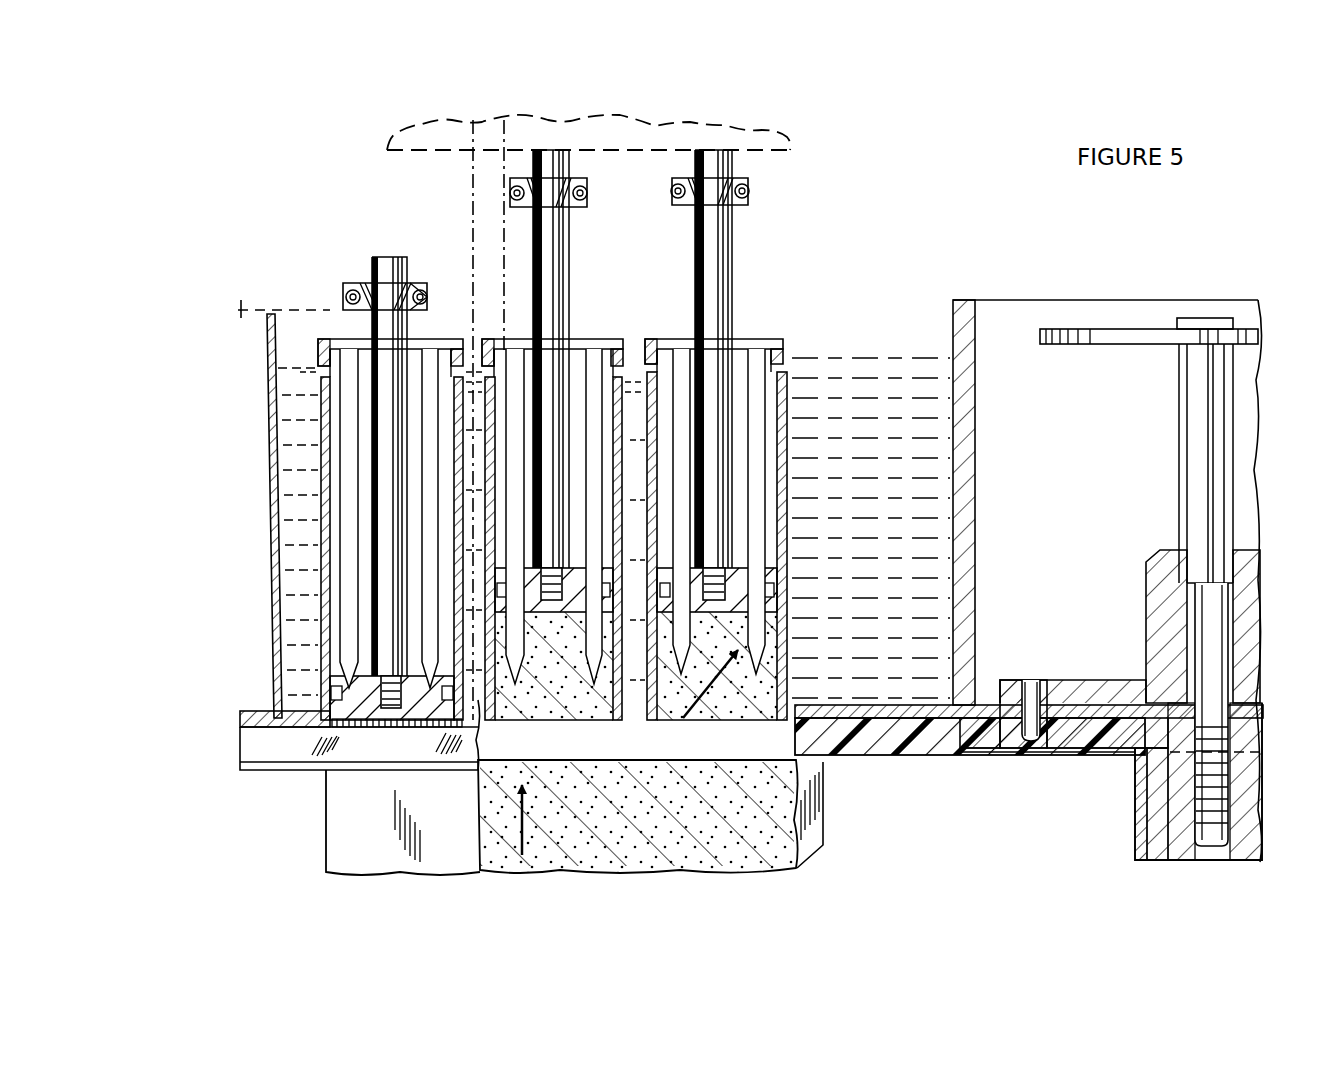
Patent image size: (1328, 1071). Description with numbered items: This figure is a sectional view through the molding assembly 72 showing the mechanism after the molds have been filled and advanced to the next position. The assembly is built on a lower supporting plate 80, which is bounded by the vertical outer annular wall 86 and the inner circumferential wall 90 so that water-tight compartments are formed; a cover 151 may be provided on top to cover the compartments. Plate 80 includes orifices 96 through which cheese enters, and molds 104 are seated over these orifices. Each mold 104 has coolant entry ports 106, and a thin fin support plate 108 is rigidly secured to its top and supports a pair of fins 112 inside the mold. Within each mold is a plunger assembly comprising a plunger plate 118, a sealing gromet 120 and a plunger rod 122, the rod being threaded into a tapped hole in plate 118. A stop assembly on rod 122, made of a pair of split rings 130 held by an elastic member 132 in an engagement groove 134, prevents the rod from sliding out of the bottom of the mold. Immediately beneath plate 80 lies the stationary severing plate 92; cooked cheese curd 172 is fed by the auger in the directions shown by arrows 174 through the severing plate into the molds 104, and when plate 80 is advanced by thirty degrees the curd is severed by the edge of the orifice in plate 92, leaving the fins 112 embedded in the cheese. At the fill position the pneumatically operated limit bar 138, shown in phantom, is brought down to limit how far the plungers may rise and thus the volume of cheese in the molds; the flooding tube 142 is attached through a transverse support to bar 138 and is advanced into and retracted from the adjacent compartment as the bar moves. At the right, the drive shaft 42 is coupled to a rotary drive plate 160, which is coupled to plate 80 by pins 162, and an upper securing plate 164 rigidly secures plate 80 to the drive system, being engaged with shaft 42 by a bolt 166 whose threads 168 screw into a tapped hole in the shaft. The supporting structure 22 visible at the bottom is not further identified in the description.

The support structure 22 is at (823, 810).
The drive shaft 42 is at (1240, 828).
The molding assembly 72 is at (258, 527).
The lower support plate 80 is at (808, 704).
The outer annular wall 86 is at (266, 420).
The inner circumferential wall 90 is at (975, 305).
The severing plate 92 is at (950, 756).
The orifices 96 is at (725, 722).
The molds 104 is at (789, 500).
The coolant entry ports 106 is at (622, 352).
The fin support plate 108 is at (412, 340).
The fins 112 is at (586, 348).
The plunger plate 118 is at (778, 568).
The sealing gromet 120 is at (776, 590).
The plunger rod 122 is at (378, 270).
The split rings 130 is at (352, 290).
The elastic member 132 is at (346, 296).
The engagement groove 134 is at (418, 292).
The limit bar 138 is at (804, 140).
The flooding tube 142 is at (471, 198).
The cover 151 is at (262, 304).
The rotary drive plate 160 is at (1106, 752).
The pins 162 is at (1036, 752).
The upper securing plate 164 is at (1060, 682).
The bolt 166 is at (1200, 440).
The threads 168 is at (1256, 800).
The cheese curd 172 is at (757, 811).
The arrows 174 is at (528, 814).